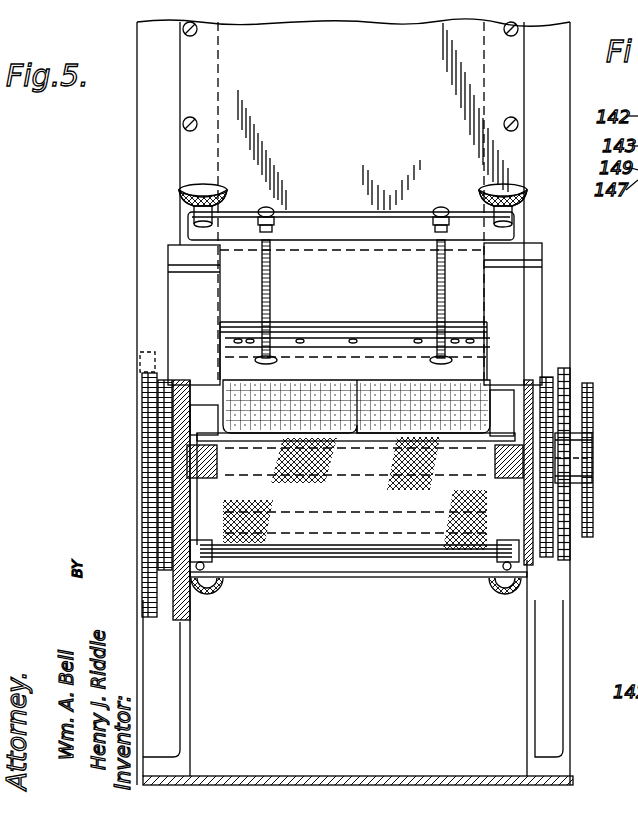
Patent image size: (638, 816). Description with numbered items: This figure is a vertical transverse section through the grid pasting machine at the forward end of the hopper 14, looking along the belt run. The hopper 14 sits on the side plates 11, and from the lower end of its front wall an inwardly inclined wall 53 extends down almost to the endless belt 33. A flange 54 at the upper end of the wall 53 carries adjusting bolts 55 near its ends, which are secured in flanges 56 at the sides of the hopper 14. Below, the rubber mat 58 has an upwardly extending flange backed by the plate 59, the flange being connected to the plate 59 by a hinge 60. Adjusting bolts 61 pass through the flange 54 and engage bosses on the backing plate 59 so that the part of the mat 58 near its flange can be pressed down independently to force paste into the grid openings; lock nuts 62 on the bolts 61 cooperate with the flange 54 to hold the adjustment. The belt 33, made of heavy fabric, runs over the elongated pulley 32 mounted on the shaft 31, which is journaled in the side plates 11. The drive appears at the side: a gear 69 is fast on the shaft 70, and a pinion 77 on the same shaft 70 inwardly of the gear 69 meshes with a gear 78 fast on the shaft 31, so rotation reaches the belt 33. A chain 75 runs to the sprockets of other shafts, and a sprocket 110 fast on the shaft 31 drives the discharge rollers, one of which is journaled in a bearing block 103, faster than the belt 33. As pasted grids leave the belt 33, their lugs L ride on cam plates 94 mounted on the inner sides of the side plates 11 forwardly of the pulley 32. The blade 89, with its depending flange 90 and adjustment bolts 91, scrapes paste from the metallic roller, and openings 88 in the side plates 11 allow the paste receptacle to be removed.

The side plates 11 is at (172, 691).
The hopper 14 is at (353, 80).
The shaft 31 is at (385, 472).
The elongated pulley 32 is at (217, 545).
The endless belt 33 is at (330, 540).
The wall 53 is at (375, 281).
The flange 54 is at (337, 222).
The adjusting bolts 55 is at (197, 188).
The flanges 56 is at (205, 309).
The mat 58 is at (312, 322).
The plate 59 is at (387, 346).
The hinge 60 is at (238, 338).
The adjusting bolts 61 is at (271, 290).
The lock nuts 62 is at (275, 226).
The gear 69 is at (146, 420).
The shaft 70 is at (422, 545).
The chain 75 is at (565, 378).
The pinion 77 is at (165, 548).
The gear 78 is at (160, 473).
The openings 88 is at (510, 614).
The blade 89 is at (460, 547).
The depending flange 90 is at (360, 566).
The adjustment bolts 91 is at (208, 595).
The cam plates 94 is at (218, 464).
The bearing block 103 is at (593, 396).
The sprocket 110 is at (596, 450).
The grid section G is at (457, 413).
The lug L is at (205, 393).